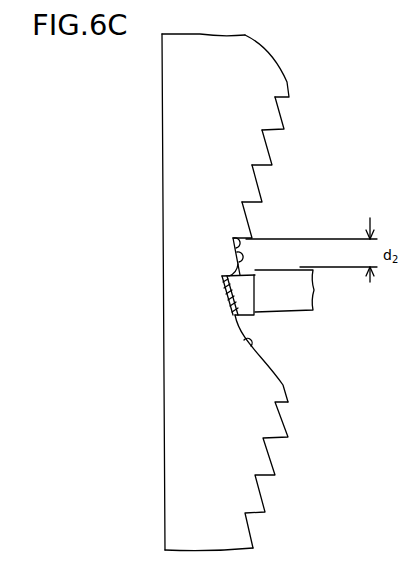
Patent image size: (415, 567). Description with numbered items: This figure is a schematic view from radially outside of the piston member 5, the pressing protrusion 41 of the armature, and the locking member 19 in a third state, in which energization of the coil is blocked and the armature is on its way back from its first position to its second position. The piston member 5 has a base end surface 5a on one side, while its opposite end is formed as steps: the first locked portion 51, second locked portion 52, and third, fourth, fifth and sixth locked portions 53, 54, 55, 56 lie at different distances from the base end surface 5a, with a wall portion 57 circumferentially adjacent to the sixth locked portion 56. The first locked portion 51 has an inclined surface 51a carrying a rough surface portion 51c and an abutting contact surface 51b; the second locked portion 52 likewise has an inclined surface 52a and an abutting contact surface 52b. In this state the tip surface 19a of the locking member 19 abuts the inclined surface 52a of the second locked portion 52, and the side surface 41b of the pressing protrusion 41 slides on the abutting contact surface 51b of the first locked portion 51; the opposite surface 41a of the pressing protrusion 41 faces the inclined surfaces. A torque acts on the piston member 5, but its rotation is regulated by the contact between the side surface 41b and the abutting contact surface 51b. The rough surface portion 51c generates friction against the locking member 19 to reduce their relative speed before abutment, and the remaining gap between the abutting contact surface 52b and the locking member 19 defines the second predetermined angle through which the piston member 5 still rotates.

The piston member 5 is at (236, 282).
The base end surface 5a is at (163, 184).
The wall portion 57 is at (292, 85).
The sixth locked portion 56 is at (288, 117).
The fifth locked portion 55 is at (280, 150).
The fourth locked portion 54 is at (278, 185).
The third locked portion 53 is at (263, 220).
The second locked portion 52 is at (224, 237).
The inclined surface 52a is at (241, 256).
The abutting contact surface 52b is at (238, 242).
The side surface 41b is at (226, 267).
The locking member 19 is at (298, 293).
The first locked portion 51 is at (228, 299).
The abutting contact surface 51b is at (235, 283).
The pressing protrusion 41 is at (228, 310).
The opposite surface 41a is at (221, 299).
The rough surface portion 51c is at (230, 292).
The tip surface 19a is at (229, 309).
The inclined surface 51a is at (246, 344).